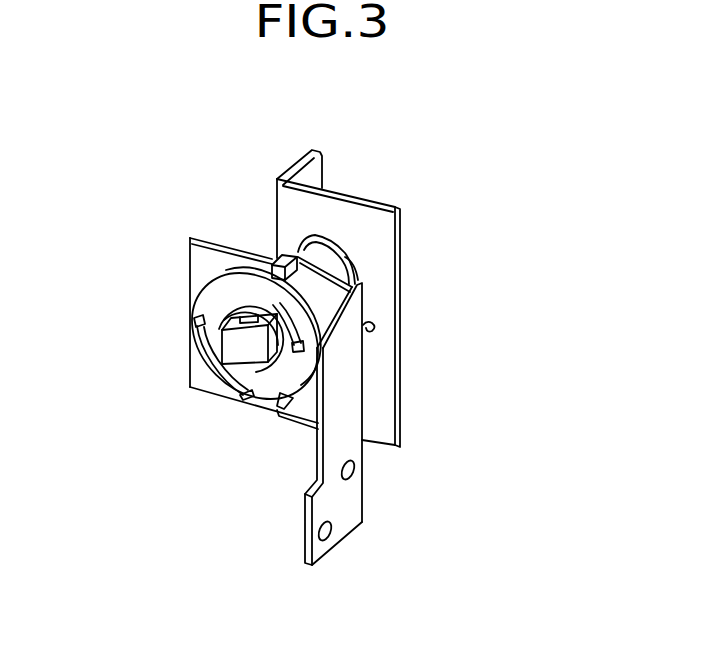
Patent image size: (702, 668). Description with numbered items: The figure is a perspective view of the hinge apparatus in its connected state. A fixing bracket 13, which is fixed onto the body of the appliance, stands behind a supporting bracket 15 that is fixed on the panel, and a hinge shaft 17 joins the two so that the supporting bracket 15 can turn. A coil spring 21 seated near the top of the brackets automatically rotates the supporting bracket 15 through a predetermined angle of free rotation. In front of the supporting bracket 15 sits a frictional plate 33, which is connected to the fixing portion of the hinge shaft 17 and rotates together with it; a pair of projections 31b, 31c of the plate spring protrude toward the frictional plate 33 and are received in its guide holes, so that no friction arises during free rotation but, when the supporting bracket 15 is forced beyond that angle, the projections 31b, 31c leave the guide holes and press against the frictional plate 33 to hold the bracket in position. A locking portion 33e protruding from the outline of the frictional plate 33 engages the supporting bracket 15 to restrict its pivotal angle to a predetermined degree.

The fixing bracket 13 is at (382, 215).
The supporting bracket 15 is at (352, 505).
The hinge shaft 17 is at (245, 349).
The coil spring 21 is at (323, 247).
The projection 31b is at (193, 320).
The projection 31c is at (312, 369).
The frictional plate 33 is at (217, 293).
The locking portion 33e is at (277, 409).